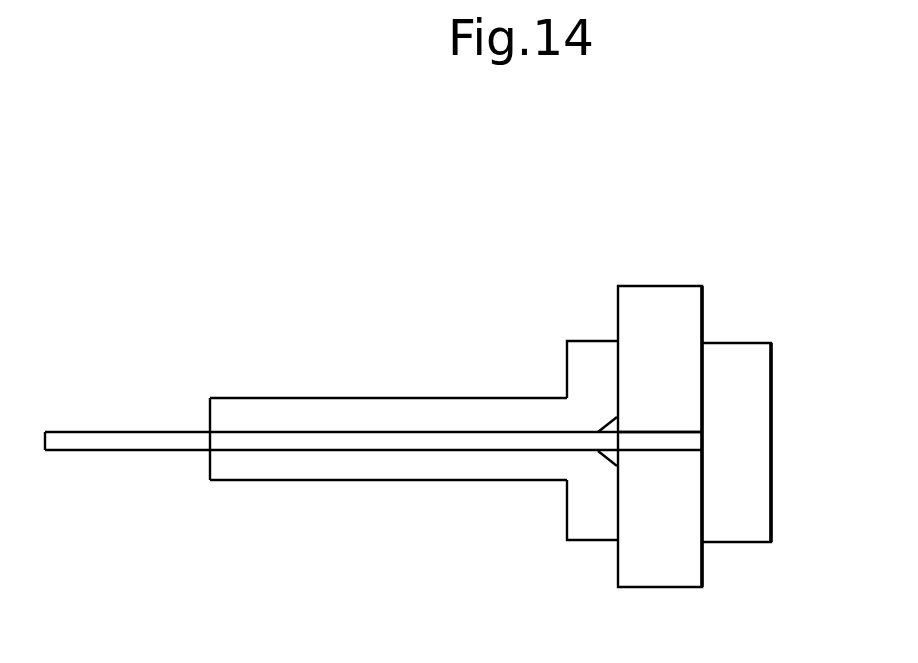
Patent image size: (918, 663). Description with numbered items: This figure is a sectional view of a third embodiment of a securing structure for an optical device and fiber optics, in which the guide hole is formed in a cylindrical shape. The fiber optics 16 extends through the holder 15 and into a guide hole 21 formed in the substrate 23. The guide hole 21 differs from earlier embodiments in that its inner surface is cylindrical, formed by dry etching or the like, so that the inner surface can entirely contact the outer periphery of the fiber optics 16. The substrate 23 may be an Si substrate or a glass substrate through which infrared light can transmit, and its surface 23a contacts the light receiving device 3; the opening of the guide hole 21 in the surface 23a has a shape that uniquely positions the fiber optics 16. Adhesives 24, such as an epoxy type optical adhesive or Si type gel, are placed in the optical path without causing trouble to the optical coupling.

The light receiving device 3 is at (757, 373).
The holder 15 is at (365, 412).
The fiber optics 16 is at (148, 432).
The guide hole 21 is at (650, 432).
The substrate 23 is at (660, 302).
The surface 23a is at (703, 300).
The adhesives 24 is at (617, 457).